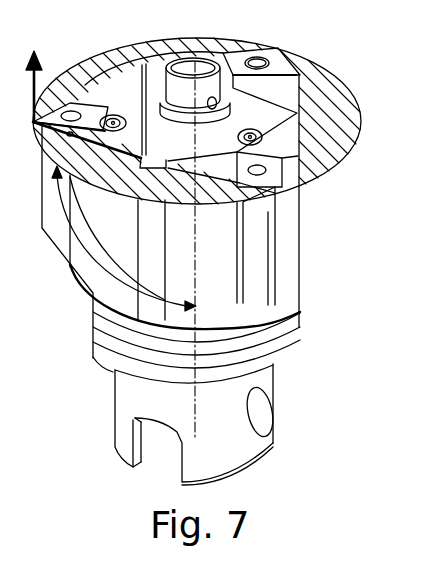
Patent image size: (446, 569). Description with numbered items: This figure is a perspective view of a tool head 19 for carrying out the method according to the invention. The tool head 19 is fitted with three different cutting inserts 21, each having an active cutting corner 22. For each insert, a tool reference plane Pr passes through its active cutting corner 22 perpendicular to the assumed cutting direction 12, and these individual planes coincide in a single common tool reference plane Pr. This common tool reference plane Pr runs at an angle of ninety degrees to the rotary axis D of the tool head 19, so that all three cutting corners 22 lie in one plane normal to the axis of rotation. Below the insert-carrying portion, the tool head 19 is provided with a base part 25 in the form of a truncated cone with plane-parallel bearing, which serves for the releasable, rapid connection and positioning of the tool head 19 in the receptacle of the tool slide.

The assumed cutting direction 12 is at (39, 53).
The tool head 19 is at (223, 245).
The cutting insert 21 is at (90, 115).
The active cutting corner 22 is at (40, 115).
The base part 25 is at (223, 398).
The rotary axis D is at (193, 68).
The tool reference plane Pr is at (313, 70).